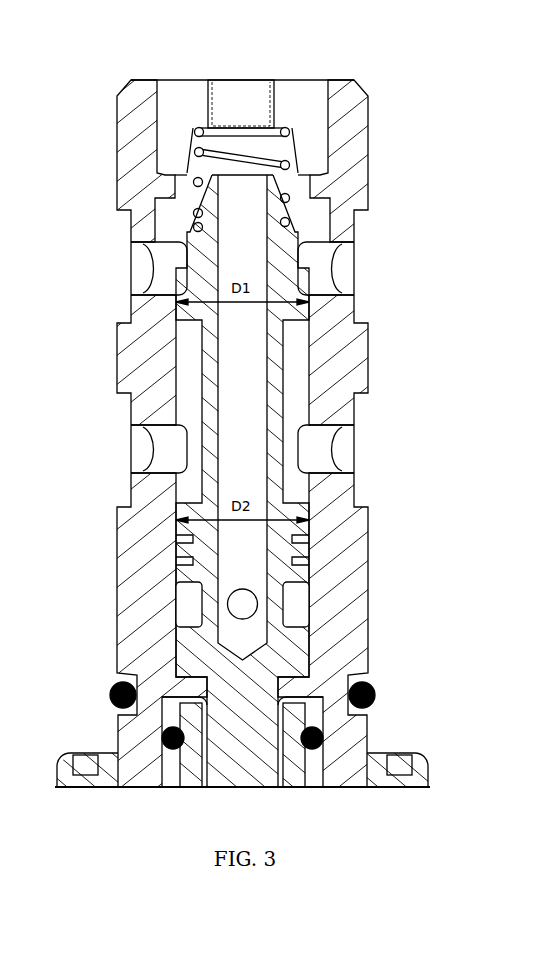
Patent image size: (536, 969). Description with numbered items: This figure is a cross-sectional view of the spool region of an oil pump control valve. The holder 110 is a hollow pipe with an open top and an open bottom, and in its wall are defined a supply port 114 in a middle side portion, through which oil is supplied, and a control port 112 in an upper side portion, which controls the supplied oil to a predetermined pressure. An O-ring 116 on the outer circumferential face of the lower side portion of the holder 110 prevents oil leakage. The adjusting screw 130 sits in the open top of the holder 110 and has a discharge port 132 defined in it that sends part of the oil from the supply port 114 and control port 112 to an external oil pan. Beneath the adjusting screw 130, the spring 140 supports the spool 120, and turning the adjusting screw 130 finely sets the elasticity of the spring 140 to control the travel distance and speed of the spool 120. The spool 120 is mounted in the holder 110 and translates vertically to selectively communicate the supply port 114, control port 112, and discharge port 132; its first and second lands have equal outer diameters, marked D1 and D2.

The holder 110 is at (368, 116).
The control port 112 is at (327, 273).
The supply port 114 is at (327, 451).
The O-ring 116 is at (376, 695).
The spool 120 is at (297, 654).
The adjusting screw 130 is at (253, 93).
The discharge port 132 is at (241, 90).
The spring 140 is at (290, 165).